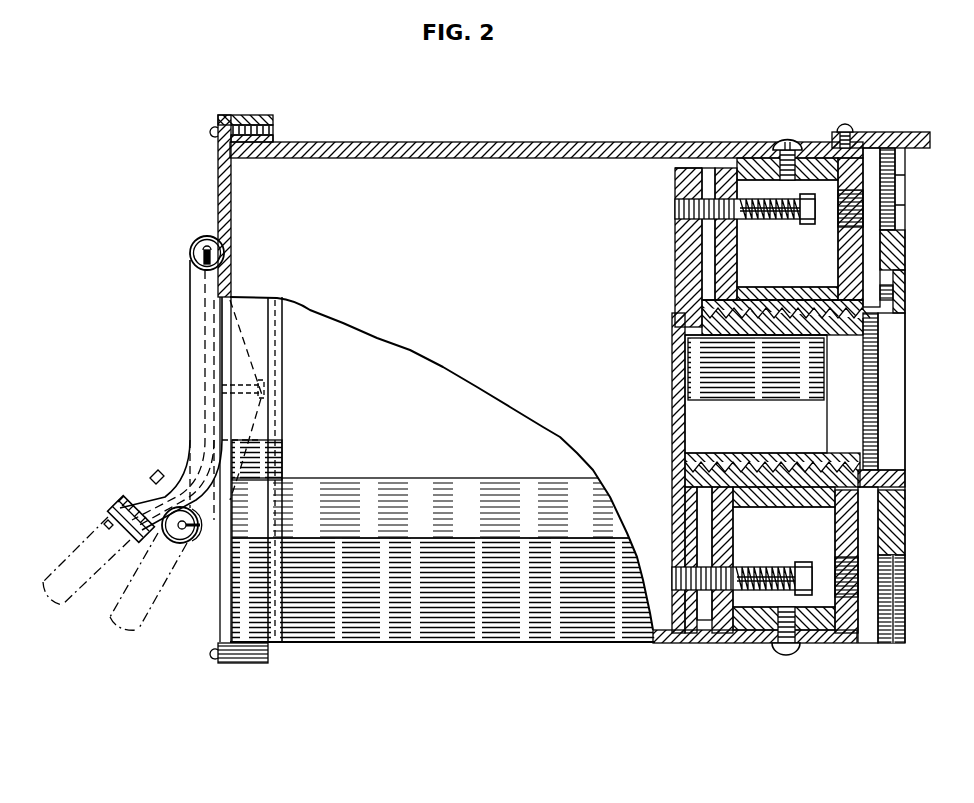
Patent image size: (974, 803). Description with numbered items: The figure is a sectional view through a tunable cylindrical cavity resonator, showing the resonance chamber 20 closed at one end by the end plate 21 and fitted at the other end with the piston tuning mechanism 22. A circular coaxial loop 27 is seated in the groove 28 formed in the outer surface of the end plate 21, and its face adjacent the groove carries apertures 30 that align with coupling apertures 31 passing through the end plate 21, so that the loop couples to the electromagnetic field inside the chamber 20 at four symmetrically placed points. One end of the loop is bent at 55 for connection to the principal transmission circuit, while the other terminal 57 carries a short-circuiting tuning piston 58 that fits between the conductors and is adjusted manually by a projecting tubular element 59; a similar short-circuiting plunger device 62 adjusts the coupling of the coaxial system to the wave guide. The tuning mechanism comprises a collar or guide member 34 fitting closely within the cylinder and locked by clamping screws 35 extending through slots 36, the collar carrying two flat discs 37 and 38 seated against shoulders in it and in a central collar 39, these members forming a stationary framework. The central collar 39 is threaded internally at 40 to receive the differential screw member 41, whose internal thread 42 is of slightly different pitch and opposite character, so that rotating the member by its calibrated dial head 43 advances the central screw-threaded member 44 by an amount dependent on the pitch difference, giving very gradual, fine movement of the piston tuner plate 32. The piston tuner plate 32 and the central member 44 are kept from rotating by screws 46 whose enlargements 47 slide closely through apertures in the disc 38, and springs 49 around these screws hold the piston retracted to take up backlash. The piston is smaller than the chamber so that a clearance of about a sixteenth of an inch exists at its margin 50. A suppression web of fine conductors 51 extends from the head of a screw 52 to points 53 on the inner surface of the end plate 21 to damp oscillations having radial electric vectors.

The resonance chamber 20 is at (490, 142).
The end plate 21 is at (218, 172).
The piston tuning mechanism 22 is at (778, 391).
The coaxial loop 27 is at (190, 330).
The groove 28 is at (236, 240).
The apertures 30 is at (198, 240).
The coupling apertures 31 is at (230, 256).
The piston tuner plate 32 is at (675, 248).
The collar or guide member 34 is at (805, 150).
The clamping screws 35 is at (786, 140).
The slots 36 is at (776, 142).
The flat disc 37 is at (870, 178).
The flat disc 38 is at (717, 176).
The central collar 39 is at (800, 292).
The internal thread 40 is at (772, 296).
The differential screw member 41 is at (702, 308).
The internal thread 42 is at (672, 353).
The calibrated dial head 43 is at (907, 240).
The central screw-threaded member 44 is at (726, 337).
The screws 46 is at (803, 224).
The enlargements 47 is at (738, 206).
The springs 49 is at (772, 218).
The margin 50 is at (675, 174).
The conductors 51 is at (250, 348).
The screw 52 is at (262, 390).
The points 53 is at (240, 442).
The bent end 55 is at (196, 543).
The terminal 57 is at (116, 504).
The short-circuiting tuning piston 58 is at (140, 495).
The projecting tubular element 59 is at (106, 522).
The short-circuiting plunger device 62 is at (180, 530).